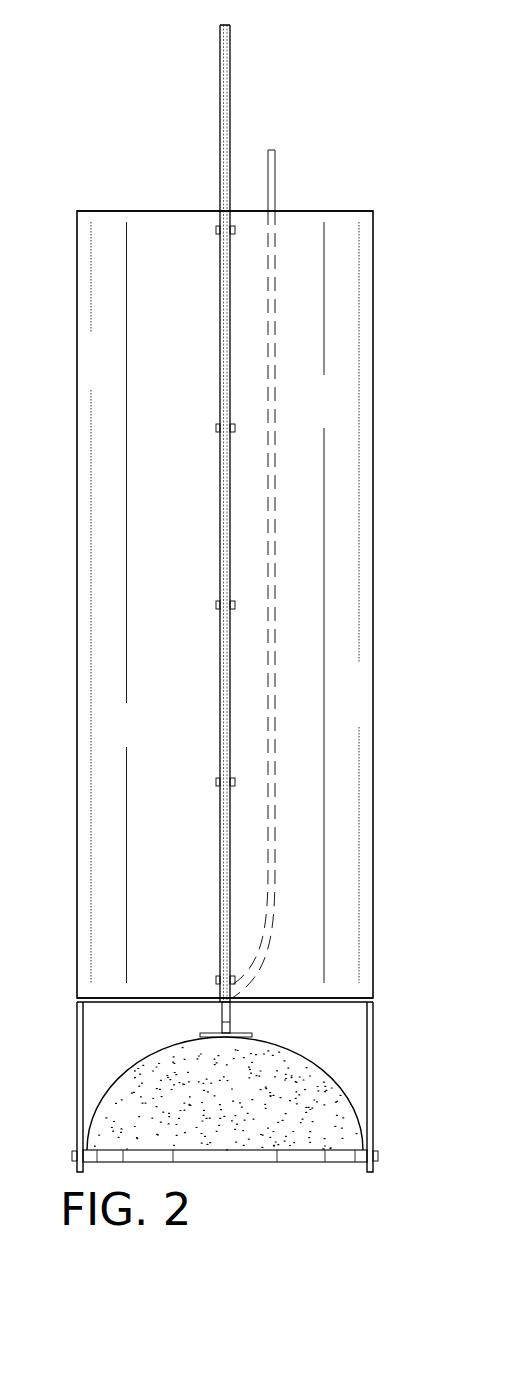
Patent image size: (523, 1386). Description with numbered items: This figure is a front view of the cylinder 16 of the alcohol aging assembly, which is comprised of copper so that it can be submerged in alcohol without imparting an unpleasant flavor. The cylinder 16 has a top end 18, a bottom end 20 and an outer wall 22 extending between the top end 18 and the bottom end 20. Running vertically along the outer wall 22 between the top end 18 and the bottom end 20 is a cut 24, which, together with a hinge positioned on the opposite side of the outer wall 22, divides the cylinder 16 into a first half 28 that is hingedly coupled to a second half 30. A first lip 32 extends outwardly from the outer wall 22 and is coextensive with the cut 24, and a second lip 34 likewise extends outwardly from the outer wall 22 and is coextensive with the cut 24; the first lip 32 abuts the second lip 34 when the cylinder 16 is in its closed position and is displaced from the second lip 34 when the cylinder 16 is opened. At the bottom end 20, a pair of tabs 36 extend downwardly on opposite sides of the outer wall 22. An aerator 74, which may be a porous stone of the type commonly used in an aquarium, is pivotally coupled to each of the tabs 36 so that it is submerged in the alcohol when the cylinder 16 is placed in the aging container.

The cylinder 16 is at (373, 293).
The top end 18 is at (127, 211).
The bottom end 20 is at (110, 1000).
The outer wall 22 is at (107, 375).
The cut 24 is at (223, 248).
The first half 28 is at (118, 558).
The second half 30 is at (349, 572).
The first lip 32 is at (220, 265).
The second lip 34 is at (230, 310).
The tabs 36 is at (77, 1082).
The aerator 74 is at (317, 1070).